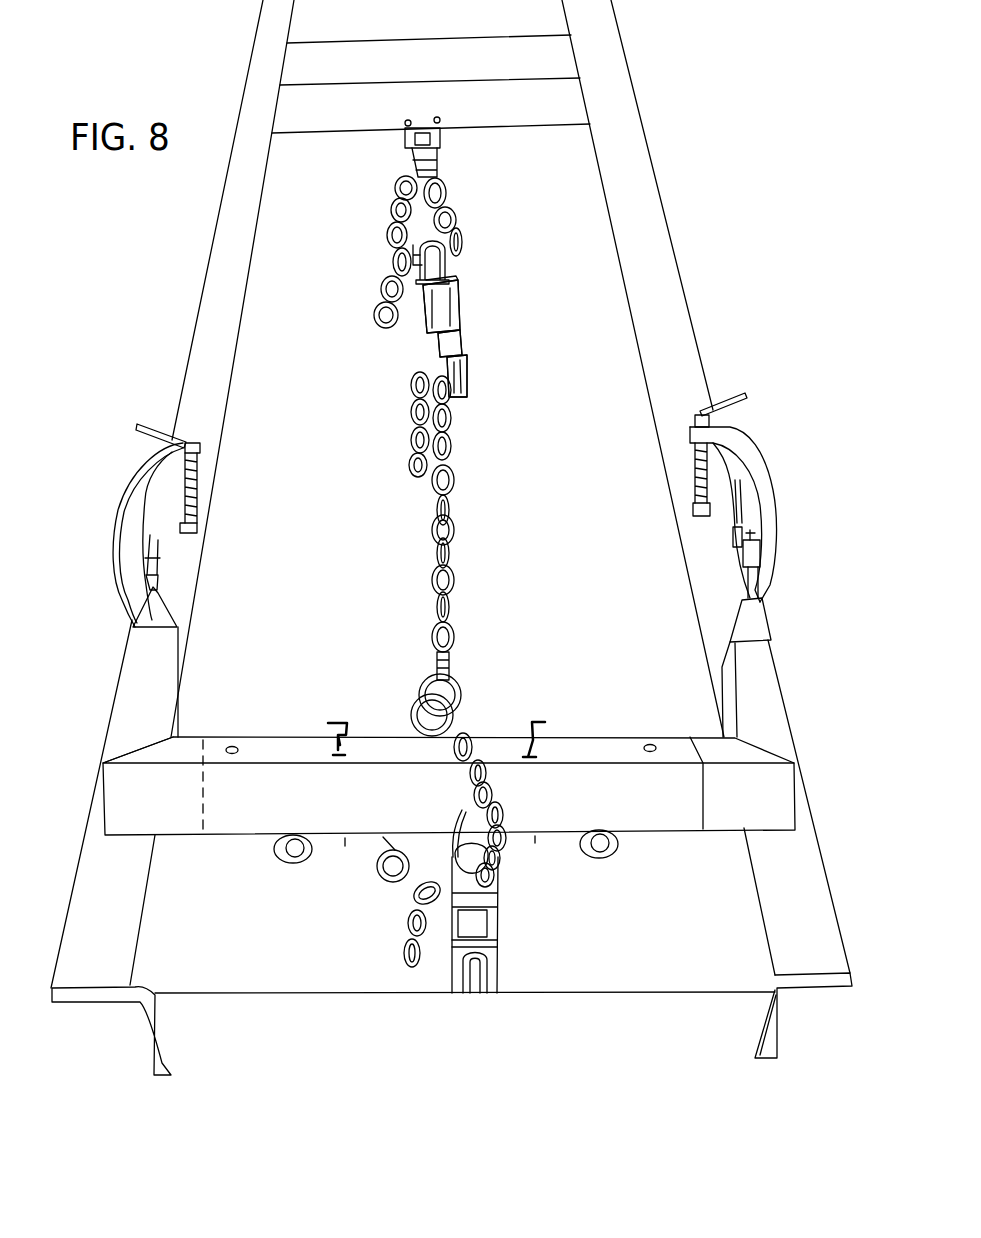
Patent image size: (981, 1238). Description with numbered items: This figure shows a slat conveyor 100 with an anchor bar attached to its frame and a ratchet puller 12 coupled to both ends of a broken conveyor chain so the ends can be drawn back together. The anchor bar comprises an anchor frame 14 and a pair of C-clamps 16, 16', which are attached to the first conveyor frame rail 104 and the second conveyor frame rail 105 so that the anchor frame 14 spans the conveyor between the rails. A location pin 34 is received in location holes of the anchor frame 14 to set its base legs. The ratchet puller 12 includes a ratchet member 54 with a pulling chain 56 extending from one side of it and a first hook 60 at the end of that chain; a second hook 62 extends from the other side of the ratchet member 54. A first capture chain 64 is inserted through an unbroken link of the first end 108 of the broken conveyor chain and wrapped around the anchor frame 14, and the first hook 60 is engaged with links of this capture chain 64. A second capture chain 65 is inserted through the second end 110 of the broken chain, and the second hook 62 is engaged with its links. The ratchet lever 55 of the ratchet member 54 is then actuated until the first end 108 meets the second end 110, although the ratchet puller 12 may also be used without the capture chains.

The slat conveyor 100 is at (157, 268).
The first conveyor frame rail 104 is at (212, 248).
The second conveyor frame rail 105 is at (653, 167).
The anchor frame 14 is at (270, 700).
The location pin 34 is at (545, 722).
The C-clamp 16 is at (132, 565).
The C-clamp 16' is at (751, 544).
The second end 110 is at (440, 148).
The second capture chain 65 is at (457, 212).
The second hook 62 is at (465, 238).
The ratchet puller 12 is at (468, 287).
The ratchet member 54 is at (460, 302).
The ratchet lever 55 is at (462, 335).
The pulling chain 56 is at (433, 583).
The first hook 60 is at (460, 693).
The first capture chain 64 is at (377, 878).
The first end 108 is at (498, 917).